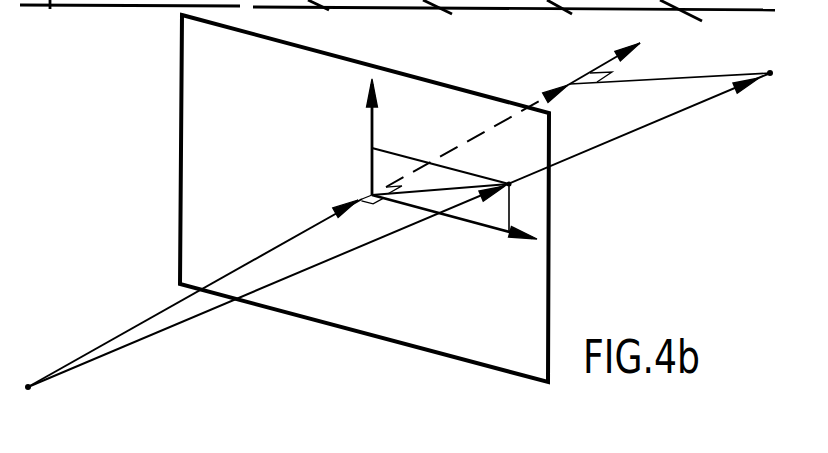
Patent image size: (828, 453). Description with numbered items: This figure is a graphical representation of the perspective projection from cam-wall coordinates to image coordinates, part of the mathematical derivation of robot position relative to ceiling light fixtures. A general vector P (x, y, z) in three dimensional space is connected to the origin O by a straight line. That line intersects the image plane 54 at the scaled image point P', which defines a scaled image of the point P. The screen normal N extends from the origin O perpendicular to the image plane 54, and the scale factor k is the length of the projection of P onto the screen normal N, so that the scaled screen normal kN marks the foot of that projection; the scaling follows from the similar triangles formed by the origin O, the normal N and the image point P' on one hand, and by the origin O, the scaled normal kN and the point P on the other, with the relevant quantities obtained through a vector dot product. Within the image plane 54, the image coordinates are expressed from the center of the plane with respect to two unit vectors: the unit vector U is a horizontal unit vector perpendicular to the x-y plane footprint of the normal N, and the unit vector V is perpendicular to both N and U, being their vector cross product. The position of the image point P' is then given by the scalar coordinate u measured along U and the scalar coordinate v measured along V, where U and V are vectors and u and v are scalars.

The image plane 54 is at (550, 287).
The origin O is at (74, 376).
The screen normal N is at (200, 291).
The scaled screen normal kN is at (513, 115).
The general vector P (x, y, z) P is at (400, 211).
The scaled image of P P' is at (445, 177).
The unit vector U is at (454, 228).
The unit vector V is at (365, 135).
The image coordinate u is at (483, 212).
The image coordinate v is at (431, 166).